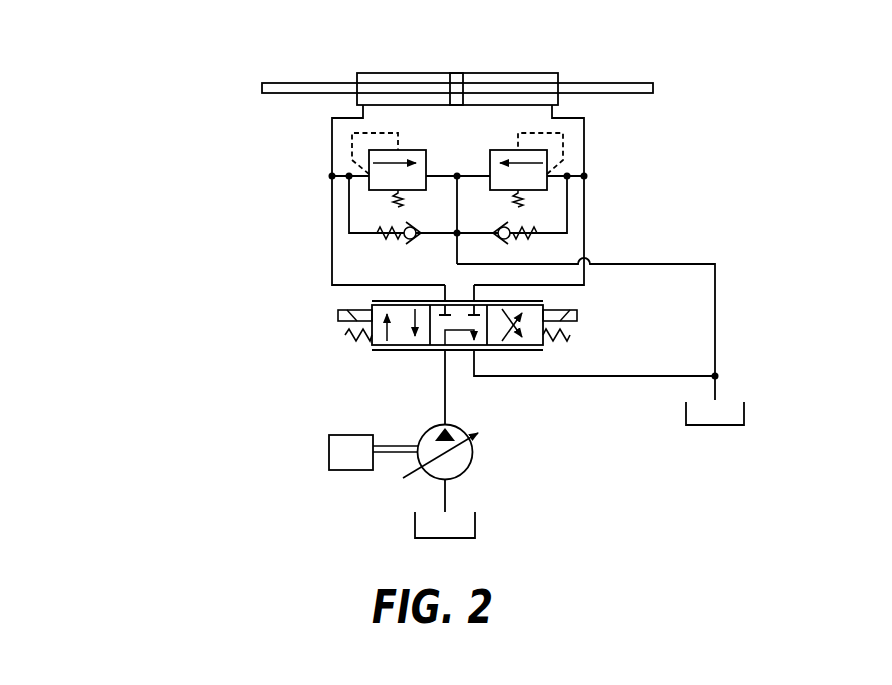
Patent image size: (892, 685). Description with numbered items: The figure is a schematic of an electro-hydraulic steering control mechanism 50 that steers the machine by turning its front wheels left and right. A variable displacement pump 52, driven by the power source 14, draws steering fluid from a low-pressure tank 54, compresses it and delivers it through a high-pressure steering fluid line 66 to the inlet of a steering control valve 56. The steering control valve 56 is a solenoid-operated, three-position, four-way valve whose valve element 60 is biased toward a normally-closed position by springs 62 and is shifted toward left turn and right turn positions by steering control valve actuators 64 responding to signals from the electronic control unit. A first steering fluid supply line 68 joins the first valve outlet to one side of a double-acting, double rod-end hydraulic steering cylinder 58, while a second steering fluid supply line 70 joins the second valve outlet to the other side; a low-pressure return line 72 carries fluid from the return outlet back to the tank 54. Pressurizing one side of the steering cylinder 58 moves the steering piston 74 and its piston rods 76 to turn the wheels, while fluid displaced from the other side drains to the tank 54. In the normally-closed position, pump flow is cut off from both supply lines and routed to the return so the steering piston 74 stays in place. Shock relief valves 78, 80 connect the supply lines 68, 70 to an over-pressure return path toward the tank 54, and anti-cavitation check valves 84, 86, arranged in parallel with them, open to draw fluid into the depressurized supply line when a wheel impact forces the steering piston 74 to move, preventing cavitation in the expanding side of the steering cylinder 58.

The electro-hydraulic steering control mechanism 50 is at (166, 161).
The piston rods 76 is at (297, 83).
The hydraulic steering cylinder 58 is at (397, 73).
The steering piston 74 is at (458, 80).
The second steering fluid supply line 70 is at (584, 148).
The first steering fluid supply line 68 is at (332, 208).
The shock relief valve 78 is at (408, 150).
The shock relief valve 80 is at (506, 150).
The anti-cavitation check valve 84 is at (395, 236).
The anti-cavitation check valve 86 is at (519, 236).
The tank 54 is at (744, 415).
The low-pressure return line 72 is at (553, 377).
The high-pressure steering fluid line 66 is at (445, 402).
The steering control valve 56 is at (545, 301).
The valve element 60 is at (372, 302).
The steering control valve actuators 64 is at (338, 316).
The springs 62 is at (350, 338).
The variable displacement pump 52 is at (473, 452).
The power source 14 is at (329, 452).